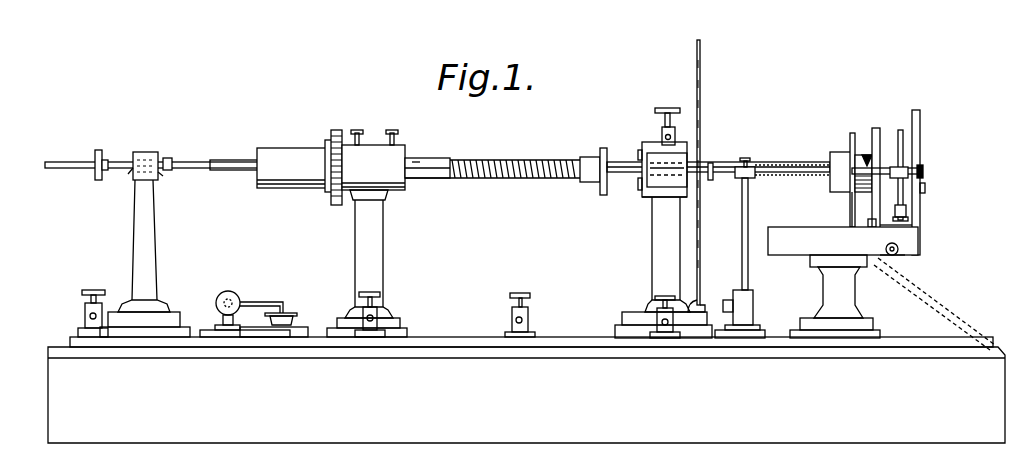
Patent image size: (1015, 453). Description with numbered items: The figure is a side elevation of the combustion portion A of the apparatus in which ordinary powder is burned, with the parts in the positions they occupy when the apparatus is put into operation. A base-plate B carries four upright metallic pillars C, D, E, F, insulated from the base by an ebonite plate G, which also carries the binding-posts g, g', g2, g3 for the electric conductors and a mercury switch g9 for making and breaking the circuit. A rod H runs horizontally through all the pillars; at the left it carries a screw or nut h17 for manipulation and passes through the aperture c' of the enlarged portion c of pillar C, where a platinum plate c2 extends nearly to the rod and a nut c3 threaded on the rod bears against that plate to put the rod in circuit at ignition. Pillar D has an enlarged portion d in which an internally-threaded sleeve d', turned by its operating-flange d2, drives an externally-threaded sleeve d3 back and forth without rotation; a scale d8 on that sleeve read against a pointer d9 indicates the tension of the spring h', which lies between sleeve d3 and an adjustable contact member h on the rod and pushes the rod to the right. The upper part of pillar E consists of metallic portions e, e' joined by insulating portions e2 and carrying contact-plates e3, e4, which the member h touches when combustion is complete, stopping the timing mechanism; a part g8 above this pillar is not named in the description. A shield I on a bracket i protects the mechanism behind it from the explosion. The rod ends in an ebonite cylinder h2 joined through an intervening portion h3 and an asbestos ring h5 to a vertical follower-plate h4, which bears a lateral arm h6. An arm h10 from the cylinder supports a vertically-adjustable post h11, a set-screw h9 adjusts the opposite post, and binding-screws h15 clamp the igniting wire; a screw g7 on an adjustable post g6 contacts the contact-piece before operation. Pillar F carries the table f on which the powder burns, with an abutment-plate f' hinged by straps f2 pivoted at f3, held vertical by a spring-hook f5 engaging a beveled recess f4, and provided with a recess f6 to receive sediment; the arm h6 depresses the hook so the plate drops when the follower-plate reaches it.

The combustion portion of the apparatus A is at (448, 271).
The base-plate B is at (526, 390).
The upright pillar C is at (157, 243).
The enlarged portion of pillar C c is at (145, 151).
The aperture c' is at (109, 193).
The platinum plate c2 is at (160, 176).
The nut c3 is at (170, 158).
The screw or nut h17 is at (98, 150).
The rod H is at (200, 172).
The upright pillar D is at (367, 263).
The internally-threaded sleeve d' is at (292, 168).
The enlarged portion of pillar D d is at (373, 149).
The operating-flange d2 is at (338, 134).
The externally-threaded sleeve d3 is at (443, 178).
The scale d8 is at (430, 157).
The index or pointer d9 is at (413, 163).
The spring h' is at (515, 155).
The adjustable contact member h is at (593, 161).
The upright pillar E is at (663, 267).
The upper metallic portion of pillar E e is at (663, 159).
The lower metallic portion of pillar E e' is at (651, 214).
The intermediate insulating portions e2 is at (676, 160).
The contact-plate e3 is at (640, 157).
The contact-plate e4 is at (640, 187).
The set screw g8 is at (667, 108).
The shield I is at (700, 90).
The standard or bracket i is at (697, 306).
The vertical post g6 is at (750, 180).
The screw g7 is at (803, 175).
The ebonite cylinder h2 is at (832, 153).
The intervening portion h3 is at (860, 152).
The follower-plate h4 is at (877, 128).
The asbestos ring h5 is at (852, 133).
The laterally-projecting arm h6 is at (868, 238).
The set-screw h9 is at (923, 170).
The arm h10 is at (850, 197).
The vertically-adjustable post h11 is at (900, 130).
The binding-screws h15 is at (912, 225).
The bed or table f is at (843, 241).
The abutment-plate f' is at (924, 182).
The straps f2 is at (900, 255).
The pivot f3 is at (892, 256).
The recess f4 is at (916, 237).
The spring-hook f5 is at (926, 190).
The recess f6 is at (896, 207).
The upright pillar F is at (835, 296).
The ebonite plate G is at (945, 345).
The binding-post g is at (77, 313).
The binding-post g' is at (387, 314).
The binding-post g2 is at (530, 318).
The binding-post g3 is at (657, 315).
The mercury switch g9 is at (262, 302).